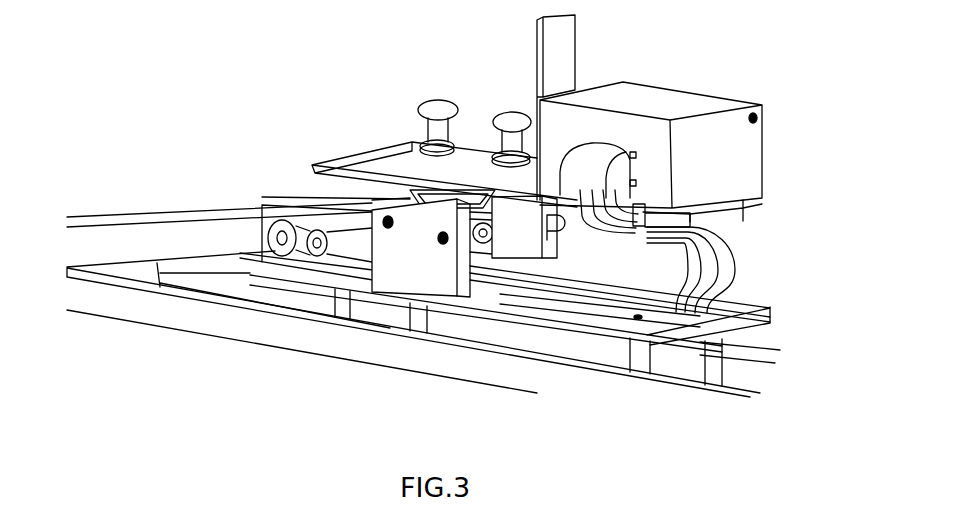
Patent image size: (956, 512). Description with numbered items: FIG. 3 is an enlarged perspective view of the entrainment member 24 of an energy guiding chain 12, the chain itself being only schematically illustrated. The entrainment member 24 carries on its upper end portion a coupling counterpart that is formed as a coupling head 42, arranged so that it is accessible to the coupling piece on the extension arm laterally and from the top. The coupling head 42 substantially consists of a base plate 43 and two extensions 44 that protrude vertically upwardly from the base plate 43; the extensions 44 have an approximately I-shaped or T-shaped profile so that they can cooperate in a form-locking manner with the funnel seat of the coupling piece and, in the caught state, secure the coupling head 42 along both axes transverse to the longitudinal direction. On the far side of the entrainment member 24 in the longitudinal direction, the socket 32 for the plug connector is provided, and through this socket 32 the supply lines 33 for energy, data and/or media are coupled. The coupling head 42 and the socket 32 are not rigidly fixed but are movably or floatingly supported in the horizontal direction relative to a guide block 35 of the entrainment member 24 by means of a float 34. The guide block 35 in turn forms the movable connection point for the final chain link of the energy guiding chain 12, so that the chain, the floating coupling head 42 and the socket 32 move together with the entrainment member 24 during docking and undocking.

The energy guiding chain 12 is at (173, 233).
The entrainment member 24 is at (801, 291).
The socket 32 is at (735, 140).
The supply lines 33 is at (720, 252).
The float 34 is at (507, 227).
The guide block 35 is at (483, 295).
The coupling head 42 is at (407, 95).
The base plate 43 is at (470, 153).
The extensions 44 is at (433, 110).